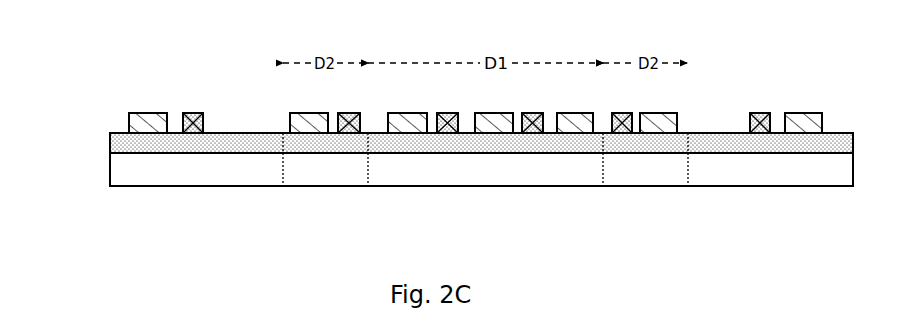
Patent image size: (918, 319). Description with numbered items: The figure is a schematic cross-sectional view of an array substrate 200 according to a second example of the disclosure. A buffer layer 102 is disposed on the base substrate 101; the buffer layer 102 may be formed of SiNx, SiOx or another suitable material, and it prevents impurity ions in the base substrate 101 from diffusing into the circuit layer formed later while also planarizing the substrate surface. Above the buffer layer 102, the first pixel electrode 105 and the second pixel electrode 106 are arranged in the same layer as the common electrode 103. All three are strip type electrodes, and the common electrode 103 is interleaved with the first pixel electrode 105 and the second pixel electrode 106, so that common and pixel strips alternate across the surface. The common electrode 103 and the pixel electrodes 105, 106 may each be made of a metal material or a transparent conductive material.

The base substrate 101 is at (110, 179).
The buffer layer 102 is at (110, 139).
The common electrode 103 is at (350, 114).
The first pixel electrode 105 is at (575, 122).
The second pixel electrode 106 is at (290, 122).
The display device 200 is at (728, 63).